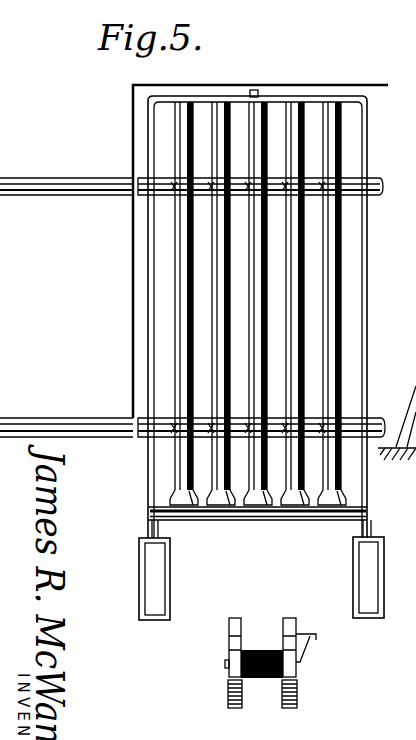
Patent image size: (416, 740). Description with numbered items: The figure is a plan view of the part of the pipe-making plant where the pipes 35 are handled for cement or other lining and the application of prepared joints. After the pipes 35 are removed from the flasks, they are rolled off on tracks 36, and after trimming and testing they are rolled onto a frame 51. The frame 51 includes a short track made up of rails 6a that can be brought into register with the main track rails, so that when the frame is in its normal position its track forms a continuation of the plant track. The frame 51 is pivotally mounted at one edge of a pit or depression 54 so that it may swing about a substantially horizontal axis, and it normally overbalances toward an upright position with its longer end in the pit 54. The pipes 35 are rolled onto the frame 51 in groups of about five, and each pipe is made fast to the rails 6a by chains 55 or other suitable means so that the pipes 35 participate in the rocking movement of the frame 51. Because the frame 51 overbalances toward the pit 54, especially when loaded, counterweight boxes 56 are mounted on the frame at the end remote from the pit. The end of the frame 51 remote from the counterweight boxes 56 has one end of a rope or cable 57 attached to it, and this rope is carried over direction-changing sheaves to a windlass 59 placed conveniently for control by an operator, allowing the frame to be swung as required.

The rails 6a is at (371, 194).
The pipes 35 is at (227, 337).
The tracks 36 is at (72, 190).
The frame 51 is at (150, 293).
The pit 54 is at (140, 368).
The chains 55 is at (222, 197).
The counterweight boxes 56 is at (158, 568).
The rope or cable 57 is at (251, 91).
The windlass 59 is at (256, 650).